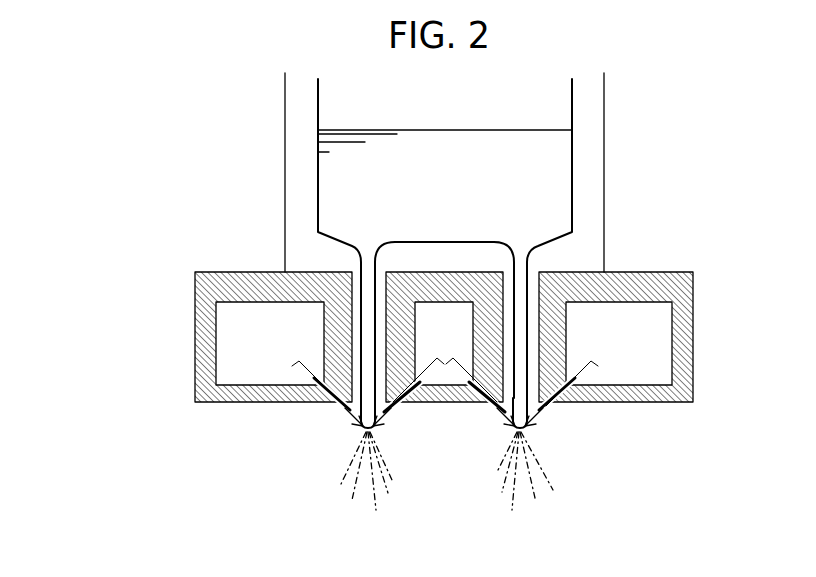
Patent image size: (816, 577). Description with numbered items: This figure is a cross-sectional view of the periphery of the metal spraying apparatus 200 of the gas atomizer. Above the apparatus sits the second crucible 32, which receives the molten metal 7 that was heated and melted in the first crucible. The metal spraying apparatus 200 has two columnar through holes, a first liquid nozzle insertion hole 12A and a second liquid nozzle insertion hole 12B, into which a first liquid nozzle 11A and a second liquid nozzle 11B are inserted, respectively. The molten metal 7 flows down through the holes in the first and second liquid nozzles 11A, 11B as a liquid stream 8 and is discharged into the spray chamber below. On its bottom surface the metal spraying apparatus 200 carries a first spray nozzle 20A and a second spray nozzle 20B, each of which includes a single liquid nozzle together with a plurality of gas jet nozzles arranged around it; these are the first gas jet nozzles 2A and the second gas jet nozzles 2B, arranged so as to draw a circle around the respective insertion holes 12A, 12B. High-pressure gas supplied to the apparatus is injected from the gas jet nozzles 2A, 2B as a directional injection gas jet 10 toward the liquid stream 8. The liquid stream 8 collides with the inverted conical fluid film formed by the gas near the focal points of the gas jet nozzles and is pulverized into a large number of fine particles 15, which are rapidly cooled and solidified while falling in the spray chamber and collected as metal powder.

The metal spraying apparatus 200 is at (176, 352).
The second crucible 32 is at (604, 170).
The molten metal 7 is at (553, 121).
The liquid stream 8 is at (527, 263).
The injection gas jet 10 is at (360, 408).
The first liquid nozzle insertion hole 12A is at (350, 338).
The second liquid nozzle insertion hole 12B is at (543, 344).
The first liquid nozzle 11A is at (408, 400).
The second liquid nozzle 11B is at (543, 412).
The first gas jet nozzle 2A is at (328, 402).
The second gas jet nozzle 2B is at (558, 403).
The first spray nozzle 20A is at (298, 458).
The second spray nozzle 20B is at (636, 455).
The fine particles 15 is at (337, 493).